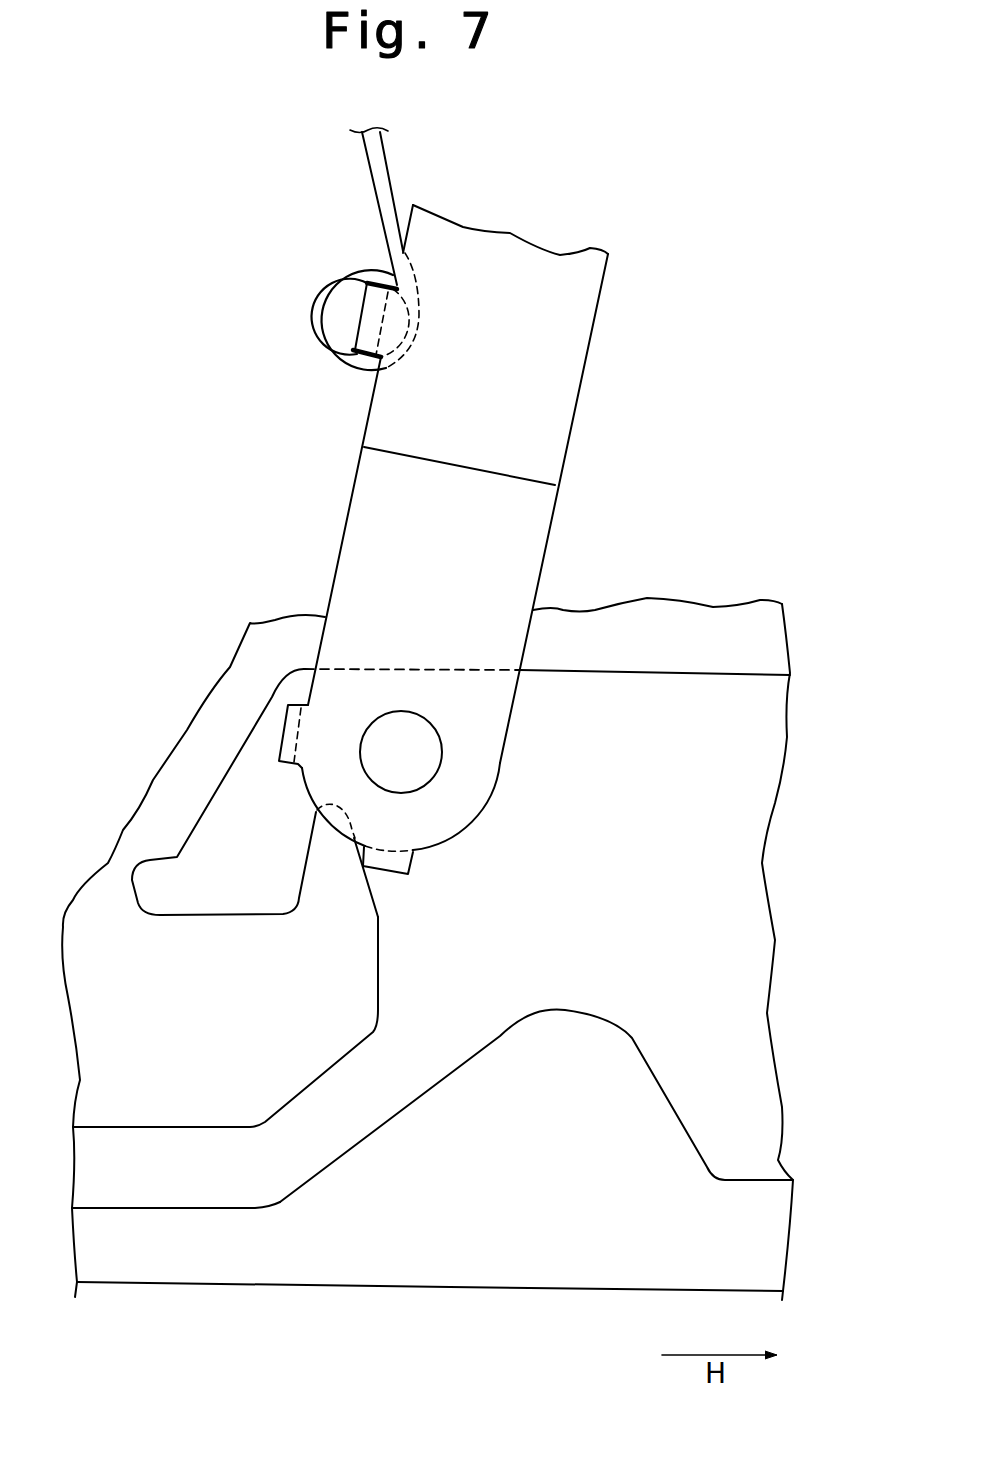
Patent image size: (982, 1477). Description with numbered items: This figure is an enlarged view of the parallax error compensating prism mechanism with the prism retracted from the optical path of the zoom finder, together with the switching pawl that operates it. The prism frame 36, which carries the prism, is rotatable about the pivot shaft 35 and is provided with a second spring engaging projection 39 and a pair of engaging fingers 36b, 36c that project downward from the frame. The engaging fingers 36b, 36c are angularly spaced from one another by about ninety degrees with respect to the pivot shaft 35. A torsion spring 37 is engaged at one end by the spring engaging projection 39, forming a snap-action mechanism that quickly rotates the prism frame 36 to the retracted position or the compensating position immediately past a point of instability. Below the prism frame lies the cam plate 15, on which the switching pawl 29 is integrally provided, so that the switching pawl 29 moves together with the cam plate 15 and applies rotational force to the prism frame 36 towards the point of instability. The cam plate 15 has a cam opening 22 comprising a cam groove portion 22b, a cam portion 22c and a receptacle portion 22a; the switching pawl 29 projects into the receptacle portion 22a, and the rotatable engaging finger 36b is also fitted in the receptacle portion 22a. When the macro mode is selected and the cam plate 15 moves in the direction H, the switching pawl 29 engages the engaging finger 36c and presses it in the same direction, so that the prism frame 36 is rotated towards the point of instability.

The cam plate 15 is at (542, 1262).
The cam opening 22 is at (728, 930).
The receptacle portion 22a is at (227, 807).
The cam groove portion 22b is at (210, 1177).
The cam portion 22c is at (563, 1030).
The switching pawl 29 is at (338, 862).
The pivot shaft 35 is at (428, 762).
The prism frame 36 is at (570, 370).
The engaging finger 36b is at (290, 728).
The engaging finger 36c is at (410, 868).
The torsion spring 37 is at (370, 172).
The second spring engaging projection 39 is at (362, 322).